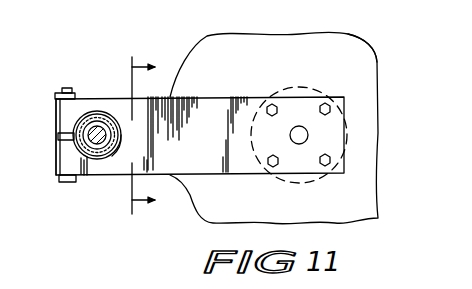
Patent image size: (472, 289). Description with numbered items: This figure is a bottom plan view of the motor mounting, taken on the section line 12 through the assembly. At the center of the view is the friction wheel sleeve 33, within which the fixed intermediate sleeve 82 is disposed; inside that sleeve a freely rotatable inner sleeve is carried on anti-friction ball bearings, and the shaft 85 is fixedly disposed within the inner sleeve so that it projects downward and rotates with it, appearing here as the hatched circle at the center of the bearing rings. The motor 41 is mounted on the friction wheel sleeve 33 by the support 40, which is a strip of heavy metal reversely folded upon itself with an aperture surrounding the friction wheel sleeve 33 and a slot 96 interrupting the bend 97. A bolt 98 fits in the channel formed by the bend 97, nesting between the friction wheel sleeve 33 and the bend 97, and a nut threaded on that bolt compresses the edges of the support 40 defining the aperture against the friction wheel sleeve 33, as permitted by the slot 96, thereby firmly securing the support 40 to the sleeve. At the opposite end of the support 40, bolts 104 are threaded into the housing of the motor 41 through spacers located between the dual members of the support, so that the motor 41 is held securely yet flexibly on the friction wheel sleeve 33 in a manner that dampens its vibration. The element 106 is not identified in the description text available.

The section line 12— 12 is at (155, 137).
The friction wheel sleeve 33 is at (109, 154).
The support 40 is at (83, 102).
The motor 41 is at (272, 50).
The fixed intermediate sleeve 82 is at (100, 158).
The shaft 85 is at (98, 127).
The slot 96 is at (58, 137).
The bend 97 is at (55, 157).
The bolt 98 is at (67, 182).
The bolts 104 is at (277, 108).
The plate edge 106 is at (318, 47).